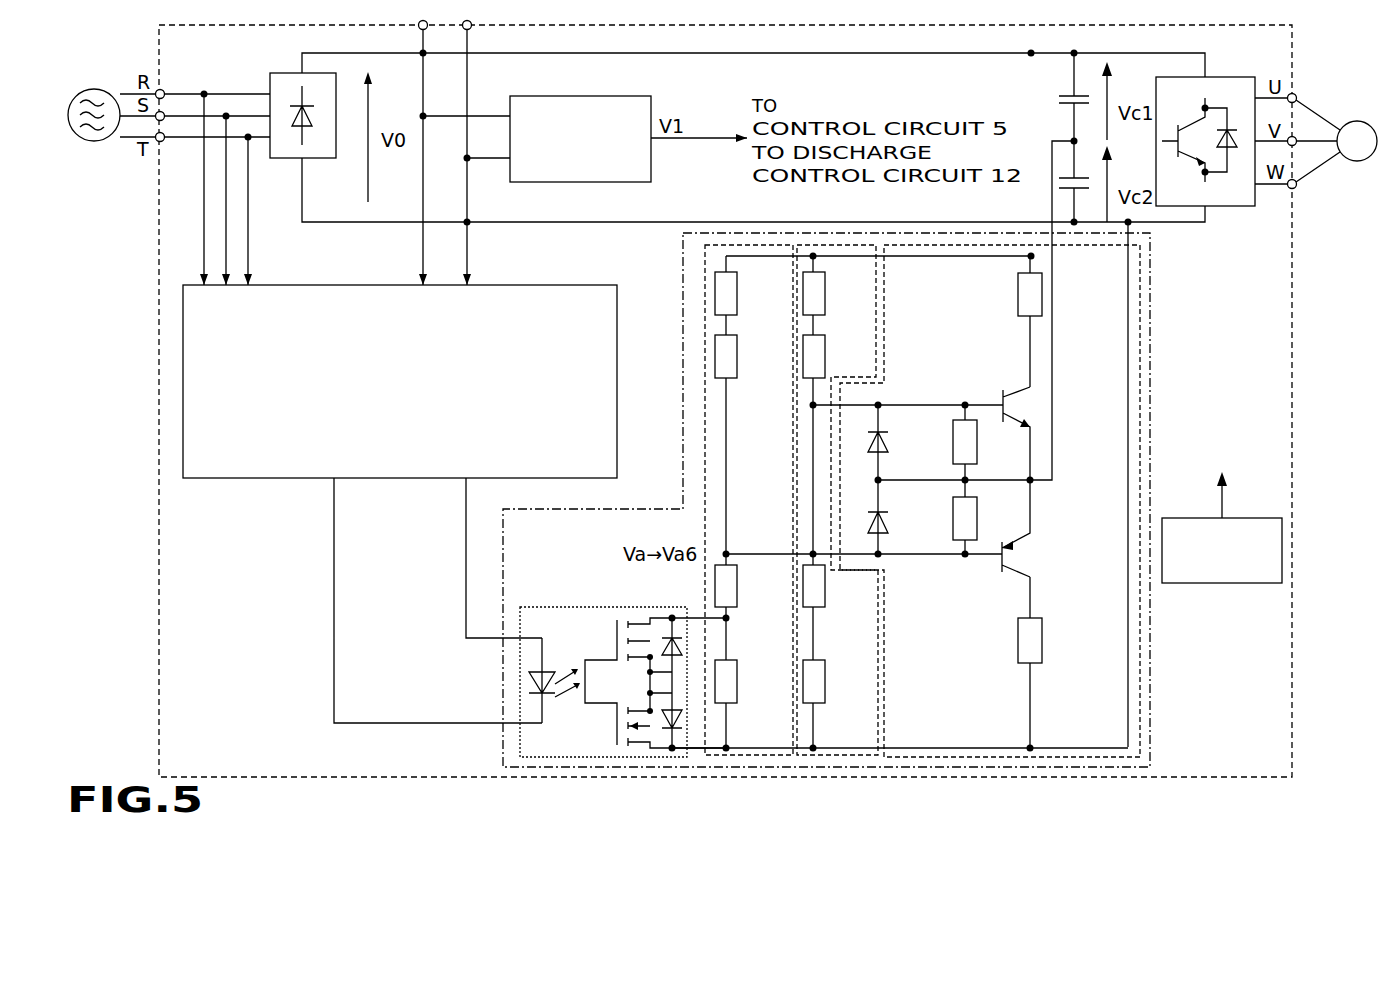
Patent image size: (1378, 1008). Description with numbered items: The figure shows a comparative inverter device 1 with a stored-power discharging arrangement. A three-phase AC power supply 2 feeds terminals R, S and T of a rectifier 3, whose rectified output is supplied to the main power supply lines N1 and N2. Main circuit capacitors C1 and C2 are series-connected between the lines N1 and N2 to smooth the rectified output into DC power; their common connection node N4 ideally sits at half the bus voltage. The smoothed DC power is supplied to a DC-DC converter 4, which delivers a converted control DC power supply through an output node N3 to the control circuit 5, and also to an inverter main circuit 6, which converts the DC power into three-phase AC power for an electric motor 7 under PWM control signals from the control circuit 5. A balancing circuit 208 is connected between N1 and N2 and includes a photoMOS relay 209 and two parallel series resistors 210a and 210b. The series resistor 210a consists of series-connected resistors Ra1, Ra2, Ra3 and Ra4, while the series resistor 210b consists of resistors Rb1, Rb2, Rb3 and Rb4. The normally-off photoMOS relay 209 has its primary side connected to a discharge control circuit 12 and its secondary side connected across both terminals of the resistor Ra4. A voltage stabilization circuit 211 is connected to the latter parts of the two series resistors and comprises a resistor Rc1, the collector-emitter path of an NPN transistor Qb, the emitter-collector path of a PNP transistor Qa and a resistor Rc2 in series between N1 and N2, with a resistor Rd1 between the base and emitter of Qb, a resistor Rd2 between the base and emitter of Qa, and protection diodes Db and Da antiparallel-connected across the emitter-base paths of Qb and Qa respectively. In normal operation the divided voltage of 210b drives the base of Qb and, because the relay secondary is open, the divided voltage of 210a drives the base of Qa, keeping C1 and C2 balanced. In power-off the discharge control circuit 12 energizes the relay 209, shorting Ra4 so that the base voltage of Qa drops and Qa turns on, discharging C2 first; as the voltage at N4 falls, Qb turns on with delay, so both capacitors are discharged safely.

The inverter device 1 is at (882, 27).
The three-phase AC power supply 2 is at (96, 88).
The rectifier 3 is at (284, 72).
The DC-DC converter 4 is at (594, 96).
The control circuit 5 is at (1222, 585).
The inverter main circuit 6 is at (1230, 207).
The electric motor 7 is at (1358, 121).
The discharge control circuit 12 is at (345, 285).
The balancing circuit 208 is at (1152, 353).
The photoMOS relay 209 is at (555, 607).
The series resistor 210a is at (749, 530).
The series resistor 210b is at (837, 530).
The voltage stabilization circuit 211 is at (906, 530).
The main power supply line N1 is at (757, 53).
The main power supply line N2 is at (725, 222).
The output node N3 is at (690, 143).
The common connection node N4 is at (1053, 373).
The main circuit capacitor C1 is at (1065, 97).
The main circuit capacitor C2 is at (1079, 181).
The resistor Ra1 is at (748, 293).
The resistor Ra2 is at (748, 356).
The resistor Ra3 is at (748, 586).
The resistor Ra4 is at (748, 681).
The resistor Rb1 is at (836, 293).
The resistor Rb2 is at (836, 356).
The resistor Rb3 is at (836, 586).
The resistor Rb4 is at (836, 681).
The first conductive resistor Rc1 is at (1006, 321).
The second conductive resistor Rc2 is at (1006, 662).
The resistor Rd1 is at (943, 451).
The resistor Rd2 is at (943, 525).
The protection diode Da is at (867, 517).
The protection diode Db is at (868, 442).
The PNP transistor Qa is at (1014, 528).
The NPN transistor Qb is at (1013, 423).